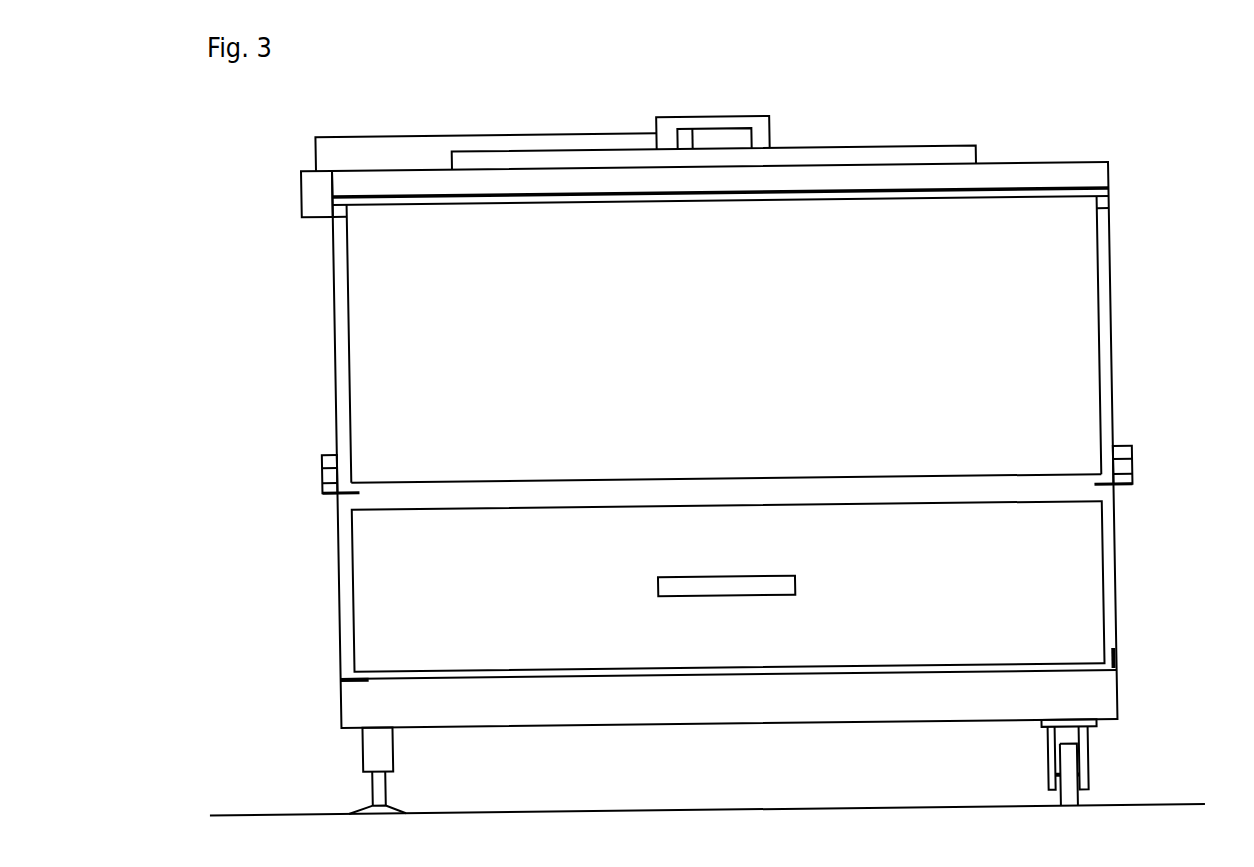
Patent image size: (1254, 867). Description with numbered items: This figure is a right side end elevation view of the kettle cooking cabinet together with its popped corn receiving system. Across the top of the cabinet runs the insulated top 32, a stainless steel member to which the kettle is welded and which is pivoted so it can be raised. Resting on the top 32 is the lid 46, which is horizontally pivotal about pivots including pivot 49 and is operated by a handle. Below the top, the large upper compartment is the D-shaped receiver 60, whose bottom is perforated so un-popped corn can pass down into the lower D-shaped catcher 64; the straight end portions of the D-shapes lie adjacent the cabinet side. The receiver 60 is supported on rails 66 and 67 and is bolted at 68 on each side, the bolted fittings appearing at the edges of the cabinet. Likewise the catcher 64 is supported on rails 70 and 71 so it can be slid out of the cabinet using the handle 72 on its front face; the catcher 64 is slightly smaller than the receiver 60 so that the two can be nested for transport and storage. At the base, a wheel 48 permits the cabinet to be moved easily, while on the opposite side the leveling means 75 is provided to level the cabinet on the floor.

The insulated top 32 is at (1052, 161).
The lid 46 is at (912, 146).
The wheel 48 is at (520, 140).
The pivot 49 is at (738, 118).
The D-shaped receiver 60 is at (765, 398).
The D-shaped catcher 64 is at (1000, 633).
The rail 66 is at (343, 495).
The rail 67 is at (1113, 483).
The bolt 68 is at (322, 475).
The rail 70 is at (342, 673).
The rail 71 is at (1116, 662).
The handle 72 is at (707, 591).
The leveling means 75 is at (363, 755).